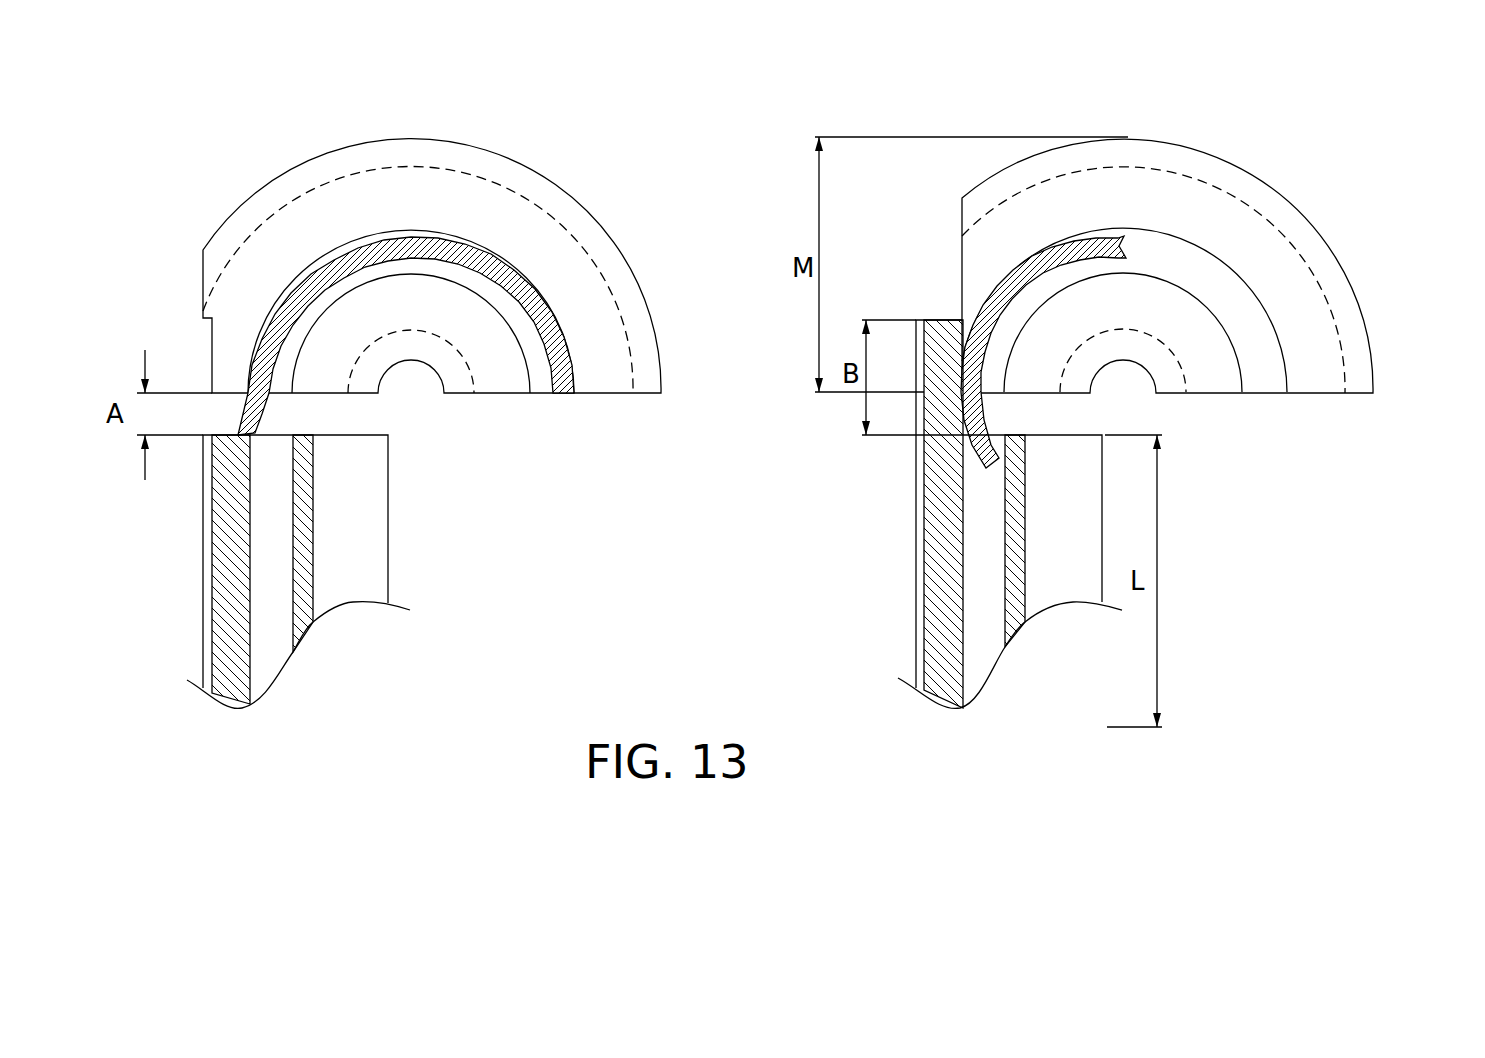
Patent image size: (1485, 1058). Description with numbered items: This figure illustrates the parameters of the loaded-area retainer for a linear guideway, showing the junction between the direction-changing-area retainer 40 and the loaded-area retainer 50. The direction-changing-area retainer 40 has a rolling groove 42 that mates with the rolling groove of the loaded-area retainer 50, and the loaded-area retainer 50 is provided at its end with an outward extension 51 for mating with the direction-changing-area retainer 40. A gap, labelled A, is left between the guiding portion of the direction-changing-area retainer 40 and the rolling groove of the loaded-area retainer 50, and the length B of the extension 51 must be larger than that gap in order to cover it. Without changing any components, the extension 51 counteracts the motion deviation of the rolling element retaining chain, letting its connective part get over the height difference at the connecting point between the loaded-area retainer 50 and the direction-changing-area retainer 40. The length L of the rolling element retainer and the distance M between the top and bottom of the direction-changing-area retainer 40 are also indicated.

The direction-changing-area retainer 40 is at (1253, 195).
The rolling groove 42 is at (1227, 302).
The loaded-area retainer 50 is at (918, 568).
The extension 51 is at (947, 405).